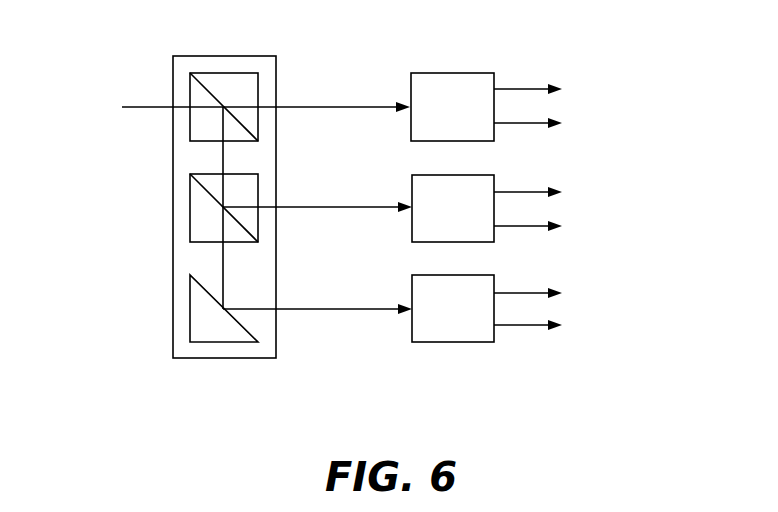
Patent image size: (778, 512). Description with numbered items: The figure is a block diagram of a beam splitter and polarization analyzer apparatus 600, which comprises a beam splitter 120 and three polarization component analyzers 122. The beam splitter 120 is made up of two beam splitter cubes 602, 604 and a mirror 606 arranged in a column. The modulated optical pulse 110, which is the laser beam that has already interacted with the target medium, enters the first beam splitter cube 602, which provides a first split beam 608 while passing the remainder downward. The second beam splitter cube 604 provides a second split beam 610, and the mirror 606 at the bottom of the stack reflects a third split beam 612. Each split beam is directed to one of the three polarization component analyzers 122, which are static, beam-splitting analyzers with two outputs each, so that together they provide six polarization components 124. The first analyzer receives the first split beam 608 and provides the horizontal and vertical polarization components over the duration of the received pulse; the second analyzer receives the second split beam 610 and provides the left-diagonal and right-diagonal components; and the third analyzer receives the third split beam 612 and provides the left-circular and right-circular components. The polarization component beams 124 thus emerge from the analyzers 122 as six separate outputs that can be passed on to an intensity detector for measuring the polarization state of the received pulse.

The outgoing laser beam 110 is at (124, 107).
The beam splitter 120 is at (223, 358).
The polarization component analyzers 122 is at (411, 73).
The polarization component beams 124 is at (527, 89).
The apparatus 600 is at (402, 413).
The beam splitter cube 602 is at (223, 73).
The beam splitter cube 604 is at (190, 215).
The mirror 606 is at (190, 326).
The first split beam 608 is at (340, 107).
The second split beam 610 is at (342, 207).
The third split beam 612 is at (342, 309).